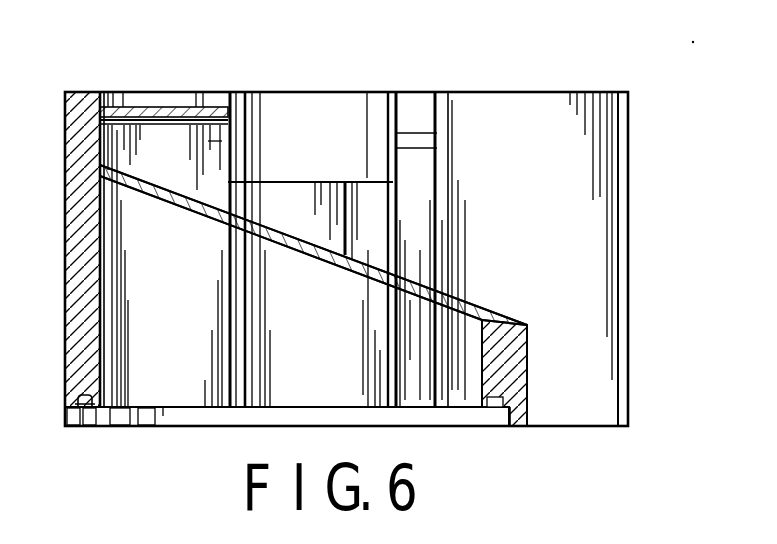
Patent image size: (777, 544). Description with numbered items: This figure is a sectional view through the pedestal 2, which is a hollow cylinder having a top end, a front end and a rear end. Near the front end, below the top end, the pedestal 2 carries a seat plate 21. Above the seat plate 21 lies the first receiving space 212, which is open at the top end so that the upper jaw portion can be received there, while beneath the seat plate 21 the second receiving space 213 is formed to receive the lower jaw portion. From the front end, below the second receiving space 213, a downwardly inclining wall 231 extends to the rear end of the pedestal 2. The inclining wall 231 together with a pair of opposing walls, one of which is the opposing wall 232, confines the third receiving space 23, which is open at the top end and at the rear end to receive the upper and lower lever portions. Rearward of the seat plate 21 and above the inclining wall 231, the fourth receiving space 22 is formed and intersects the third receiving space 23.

The pedestal 2 is at (125, 66).
The seat plate 21 is at (195, 122).
The first receiving space 212 is at (160, 107).
The second receiving space 213 is at (265, 125).
The fourth receiving space 22 is at (325, 135).
The third receiving space 23 is at (325, 208).
The inclining wall 231 is at (413, 282).
The opposing wall 232 is at (553, 120).